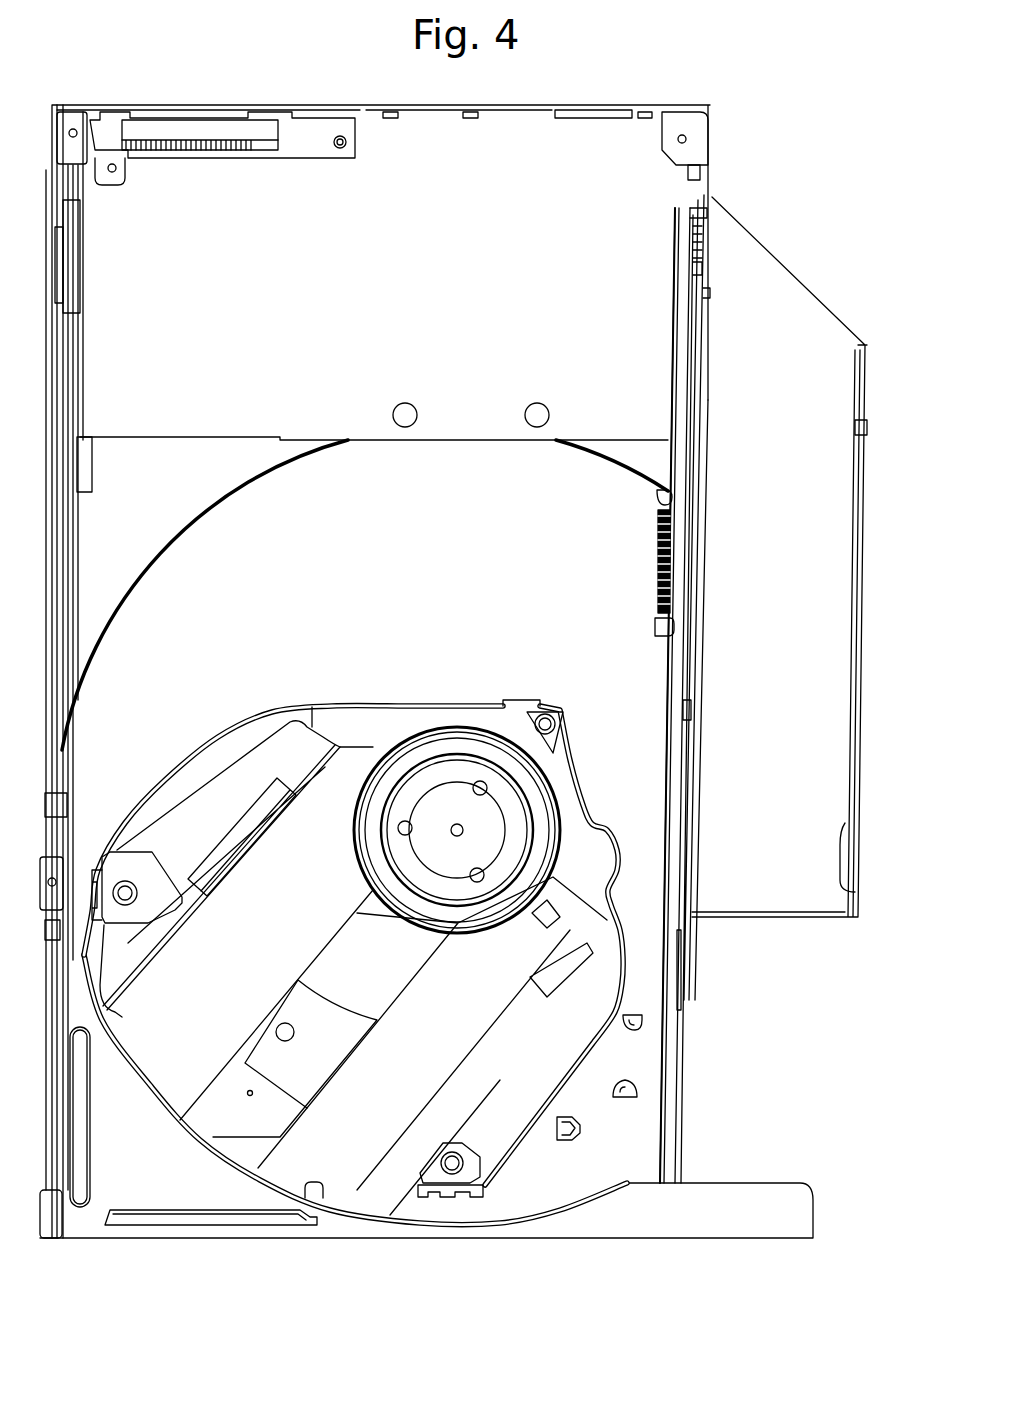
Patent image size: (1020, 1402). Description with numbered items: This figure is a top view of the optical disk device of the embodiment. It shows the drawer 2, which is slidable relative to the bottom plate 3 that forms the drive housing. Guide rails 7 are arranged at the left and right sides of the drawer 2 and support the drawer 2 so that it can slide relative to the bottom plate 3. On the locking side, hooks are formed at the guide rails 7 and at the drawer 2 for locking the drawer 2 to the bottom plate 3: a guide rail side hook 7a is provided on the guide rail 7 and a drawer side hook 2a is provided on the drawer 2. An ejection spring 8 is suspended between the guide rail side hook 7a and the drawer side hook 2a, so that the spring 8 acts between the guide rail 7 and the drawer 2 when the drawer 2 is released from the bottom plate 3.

The drawer 2 is at (135, 633).
The drawer side hook 2a is at (655, 497).
The bottom plate 3 is at (593, 213).
The guide rails 7 is at (698, 673).
The guide rail side hook 7a is at (655, 625).
The ejection spring 8 is at (670, 590).